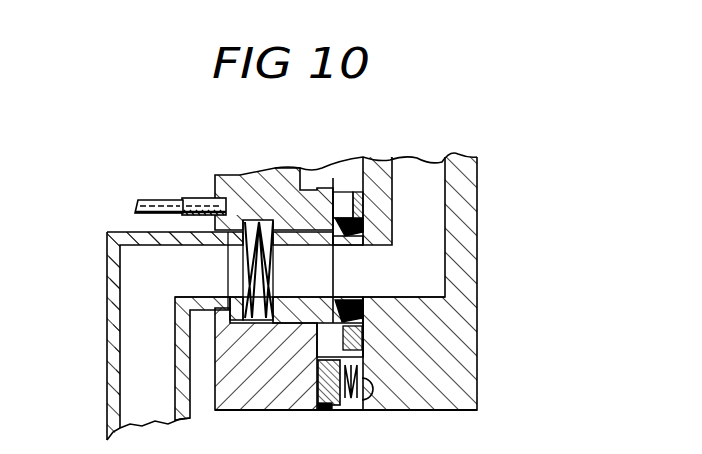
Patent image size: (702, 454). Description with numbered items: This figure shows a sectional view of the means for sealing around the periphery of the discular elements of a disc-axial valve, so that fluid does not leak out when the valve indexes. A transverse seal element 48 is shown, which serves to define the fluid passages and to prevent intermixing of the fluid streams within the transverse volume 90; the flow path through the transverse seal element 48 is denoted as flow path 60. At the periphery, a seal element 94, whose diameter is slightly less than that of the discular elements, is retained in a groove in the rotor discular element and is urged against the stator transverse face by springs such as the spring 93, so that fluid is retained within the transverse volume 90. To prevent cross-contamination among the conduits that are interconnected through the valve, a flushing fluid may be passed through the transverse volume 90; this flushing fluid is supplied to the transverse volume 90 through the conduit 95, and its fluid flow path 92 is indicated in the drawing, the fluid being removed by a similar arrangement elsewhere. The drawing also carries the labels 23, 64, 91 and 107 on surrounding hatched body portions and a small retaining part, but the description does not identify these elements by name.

The housing wall 23 is at (106, 258).
The transverse seal element 48 is at (337, 183).
The flow path 60 is at (318, 283).
The body 64 is at (433, 206).
The transverse volume 90 is at (360, 348).
The retainer 91 is at (318, 405).
The fluid flow path 92 is at (207, 198).
The spring 93 is at (368, 396).
The seal element 94 is at (323, 405).
The conduit 95 is at (168, 199).
The wall 107 is at (168, 375).